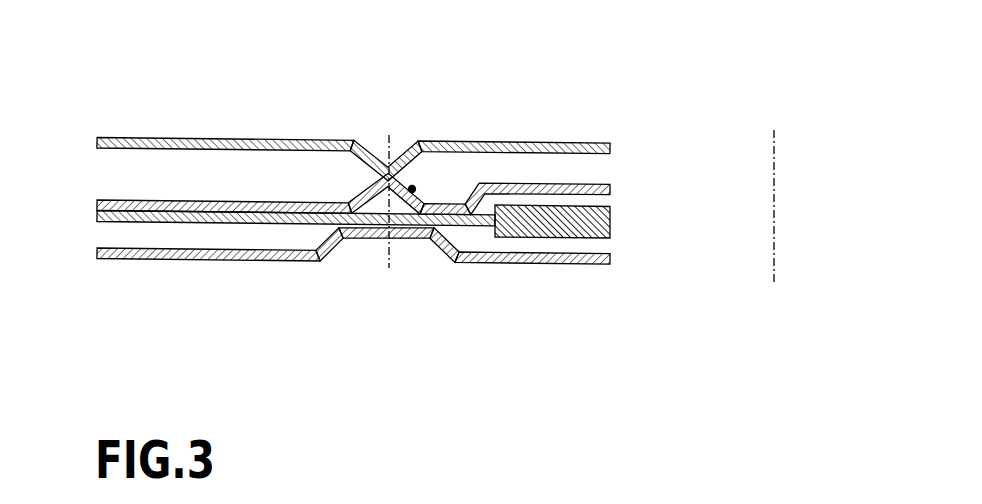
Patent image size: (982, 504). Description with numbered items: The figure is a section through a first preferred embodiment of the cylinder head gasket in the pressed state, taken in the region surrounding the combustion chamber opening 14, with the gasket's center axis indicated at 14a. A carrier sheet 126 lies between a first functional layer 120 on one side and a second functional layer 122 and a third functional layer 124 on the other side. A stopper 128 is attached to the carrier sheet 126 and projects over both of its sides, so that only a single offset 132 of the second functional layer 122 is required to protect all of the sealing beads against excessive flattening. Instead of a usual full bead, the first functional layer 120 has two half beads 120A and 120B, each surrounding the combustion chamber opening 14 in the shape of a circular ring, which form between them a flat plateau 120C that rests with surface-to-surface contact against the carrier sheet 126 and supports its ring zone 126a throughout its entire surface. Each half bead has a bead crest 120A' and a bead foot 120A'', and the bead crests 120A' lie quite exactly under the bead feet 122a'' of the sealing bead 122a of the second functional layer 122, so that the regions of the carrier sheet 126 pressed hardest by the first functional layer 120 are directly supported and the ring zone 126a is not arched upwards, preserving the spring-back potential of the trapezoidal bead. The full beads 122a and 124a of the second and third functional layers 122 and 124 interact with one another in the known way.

The combustion chamber opening 14 is at (671, 122).
The center axis of connector 14a is at (774, 258).
The first functional layer 120 is at (138, 259).
The half bead 120A is at (494, 307).
The bead crest 120A' is at (382, 333).
The bead foot 120A'' is at (400, 298).
The half bead 120B is at (333, 266).
The plateau 120C is at (401, 255).
The second functional layer 122 is at (145, 200).
The sealing bead 122a is at (315, 191).
The bead foot 122a'' is at (393, 265).
The third functional layer 124 is at (143, 137).
The full bead 124a is at (353, 160).
The carrier sheet 126 is at (137, 222).
The ring zone 126a is at (413, 187).
The stopper 128 is at (626, 253).
The offset 132 is at (475, 193).